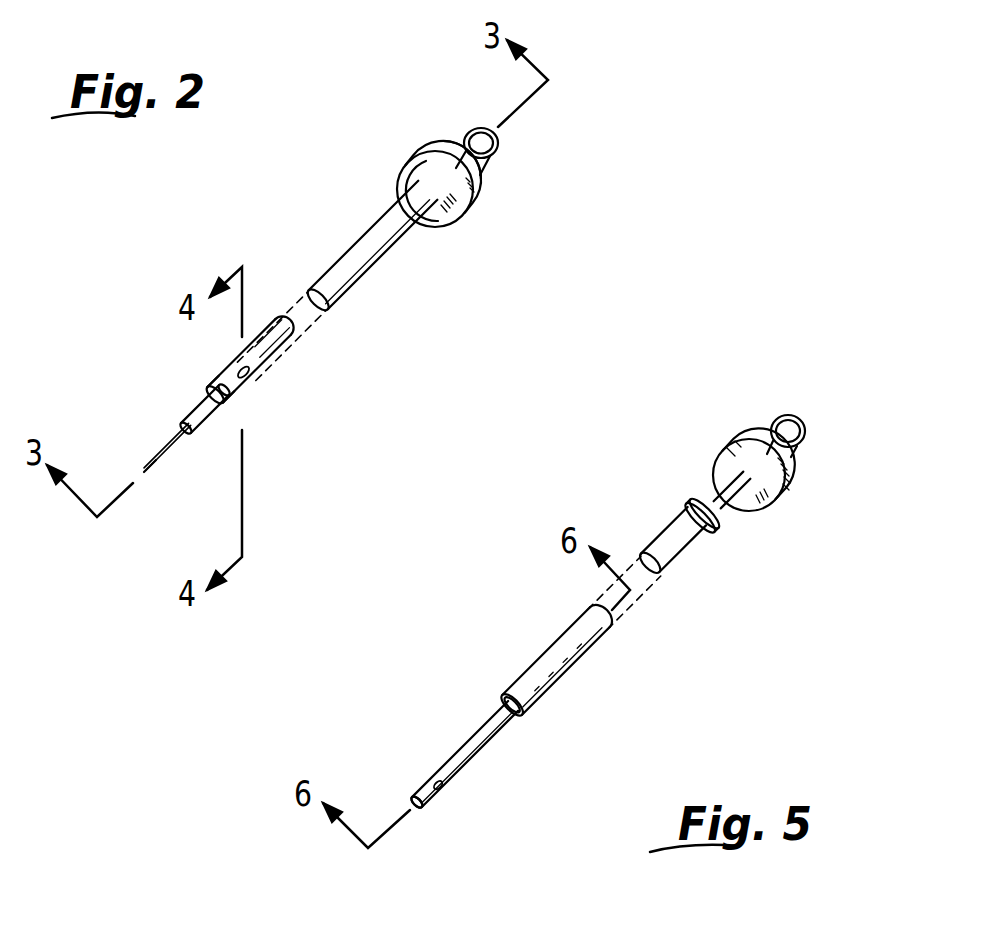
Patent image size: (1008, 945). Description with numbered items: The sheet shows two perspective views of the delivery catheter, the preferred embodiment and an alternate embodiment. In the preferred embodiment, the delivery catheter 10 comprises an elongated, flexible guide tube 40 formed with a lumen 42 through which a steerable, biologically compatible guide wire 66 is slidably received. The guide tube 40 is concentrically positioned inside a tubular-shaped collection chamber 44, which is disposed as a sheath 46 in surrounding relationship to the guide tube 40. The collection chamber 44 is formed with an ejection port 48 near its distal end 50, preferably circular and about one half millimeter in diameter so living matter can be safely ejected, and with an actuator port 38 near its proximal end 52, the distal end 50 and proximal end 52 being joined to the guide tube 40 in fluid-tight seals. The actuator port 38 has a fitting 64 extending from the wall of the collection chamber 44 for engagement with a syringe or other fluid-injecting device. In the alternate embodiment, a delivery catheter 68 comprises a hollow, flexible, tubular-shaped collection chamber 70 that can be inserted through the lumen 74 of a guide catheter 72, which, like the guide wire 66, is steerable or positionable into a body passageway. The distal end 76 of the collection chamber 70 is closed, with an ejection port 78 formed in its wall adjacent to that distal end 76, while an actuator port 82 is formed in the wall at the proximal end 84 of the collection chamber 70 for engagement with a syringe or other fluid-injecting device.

In FIG. 2, the delivery catheter 10 is at (318, 214).
In FIG. 2, the actuator port 38 is at (496, 164).
In FIG. 2, the guide tube 40 is at (200, 413).
In FIG. 2, the lumen 42 is at (175, 452).
In FIG. 2, the collection chamber 44 is at (290, 352).
In FIG. 2, the sheath 46 is at (353, 267).
In FIG. 2, the ejection port 48 is at (248, 380).
In FIG. 2, the distal end 50 is at (221, 376).
In FIG. 2, the proximal end 52 is at (405, 166).
In FIG. 2, the fitting 64 is at (481, 190).
In FIG. 5, the fitting 64 is at (790, 490).
In FIG. 2, the guide wire 66 is at (156, 466).
In FIG. 5, the delivery catheter 68 is at (631, 466).
In FIG. 5, the collection chamber 70 is at (467, 764).
In FIG. 5, the guide catheter 72 is at (568, 668).
In FIG. 5, the lumen 74 is at (506, 698).
In FIG. 5, the distal end 76 is at (420, 812).
In FIG. 5, the ejection port 78 is at (437, 778).
In FIG. 5, the actuator port 82 is at (768, 430).
In FIG. 5, the proximal end 84 is at (718, 510).